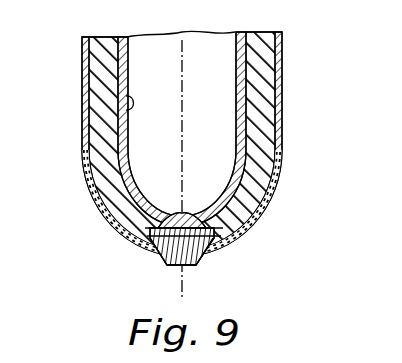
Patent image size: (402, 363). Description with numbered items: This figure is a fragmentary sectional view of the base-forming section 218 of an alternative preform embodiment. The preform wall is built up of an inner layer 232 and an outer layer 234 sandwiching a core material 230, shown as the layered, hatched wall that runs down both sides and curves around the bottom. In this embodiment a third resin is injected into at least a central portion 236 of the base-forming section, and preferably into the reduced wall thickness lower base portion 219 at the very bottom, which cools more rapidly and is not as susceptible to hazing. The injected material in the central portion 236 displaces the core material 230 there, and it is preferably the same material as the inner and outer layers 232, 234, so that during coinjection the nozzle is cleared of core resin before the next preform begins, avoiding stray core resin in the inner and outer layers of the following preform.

The preform base-forming section 218 is at (283, 86).
The reduced wall thickness lower base portion 219 is at (257, 218).
The core material 230 is at (83, 139).
The inner layer 232 is at (122, 90).
The outer layer 234 is at (83, 105).
The central portion 236 is at (112, 217).